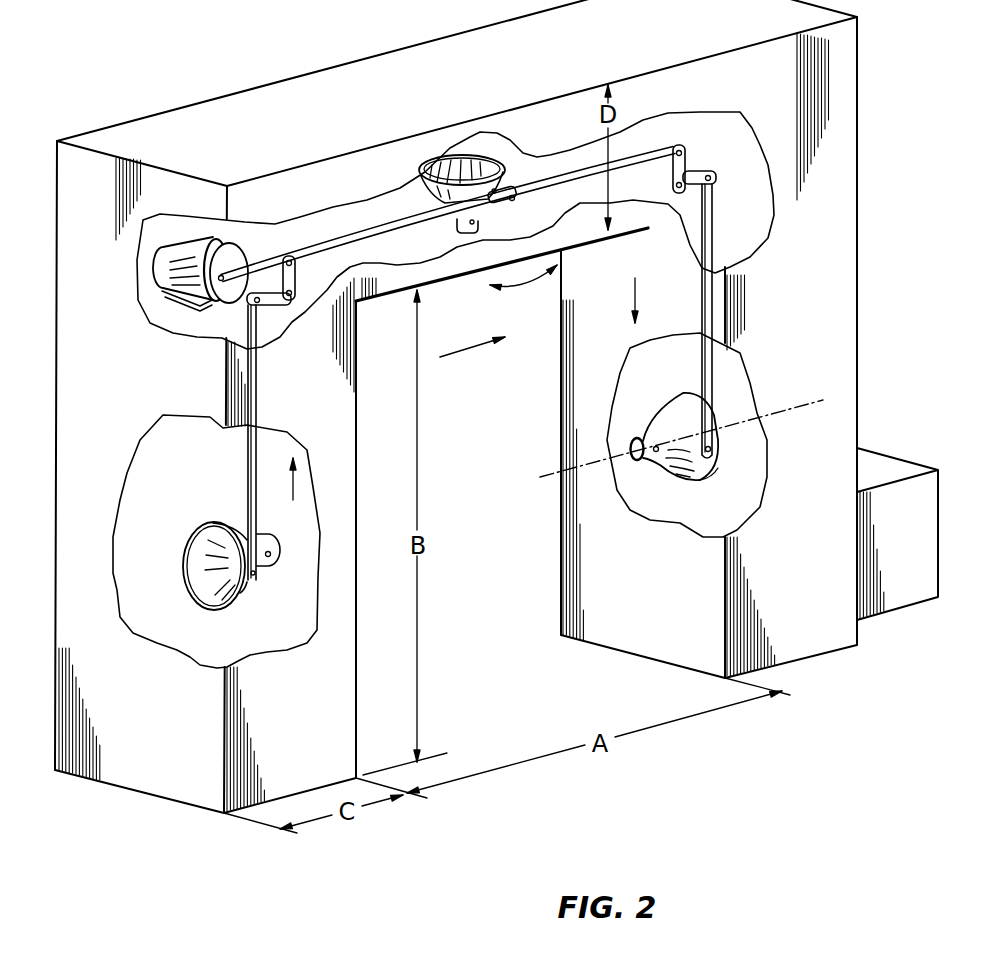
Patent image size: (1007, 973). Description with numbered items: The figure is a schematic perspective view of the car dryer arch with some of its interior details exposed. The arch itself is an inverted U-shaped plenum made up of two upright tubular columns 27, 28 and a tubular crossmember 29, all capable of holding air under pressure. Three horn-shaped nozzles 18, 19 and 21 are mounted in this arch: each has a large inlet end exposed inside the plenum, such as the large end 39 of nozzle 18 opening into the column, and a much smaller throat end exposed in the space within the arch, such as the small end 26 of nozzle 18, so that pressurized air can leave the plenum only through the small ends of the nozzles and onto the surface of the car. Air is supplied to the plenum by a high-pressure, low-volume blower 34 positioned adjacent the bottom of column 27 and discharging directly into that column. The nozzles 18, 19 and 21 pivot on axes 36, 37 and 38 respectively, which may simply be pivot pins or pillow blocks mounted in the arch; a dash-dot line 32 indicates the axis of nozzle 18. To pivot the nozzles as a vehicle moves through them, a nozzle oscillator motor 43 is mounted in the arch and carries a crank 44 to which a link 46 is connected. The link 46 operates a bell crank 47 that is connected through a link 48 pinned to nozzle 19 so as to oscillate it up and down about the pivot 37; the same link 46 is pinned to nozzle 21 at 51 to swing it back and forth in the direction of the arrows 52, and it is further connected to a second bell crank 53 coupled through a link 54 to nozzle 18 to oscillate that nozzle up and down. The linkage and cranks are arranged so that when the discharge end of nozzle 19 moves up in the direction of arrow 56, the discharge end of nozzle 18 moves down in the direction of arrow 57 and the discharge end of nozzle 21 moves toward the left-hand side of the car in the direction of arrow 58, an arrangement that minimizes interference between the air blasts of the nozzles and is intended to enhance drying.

The nozzle 18 is at (673, 460).
The nozzle 19 is at (265, 565).
The nozzle 21 is at (462, 165).
The small end 26 is at (630, 448).
The column 27 is at (818, 623).
The column 28 is at (113, 757).
The crossmember 29 is at (320, 88).
The axis line 32 is at (767, 417).
The blower 34 is at (883, 460).
The axis 36 is at (656, 446).
The axis 37 is at (268, 557).
The axis 38 is at (478, 220).
The large end 39 is at (720, 487).
The nozzle oscillator motor 43 is at (180, 258).
The crank 44 is at (260, 267).
The link 46 is at (387, 235).
The bell crank 47 is at (270, 298).
The link 48 is at (252, 461).
The pin connection 51 is at (512, 190).
The arrows 52 is at (525, 292).
The bell crank 53 is at (690, 173).
The link 54 is at (708, 370).
The arrow 56 is at (293, 488).
The arrow 57 is at (635, 280).
The arrow 58 is at (460, 347).